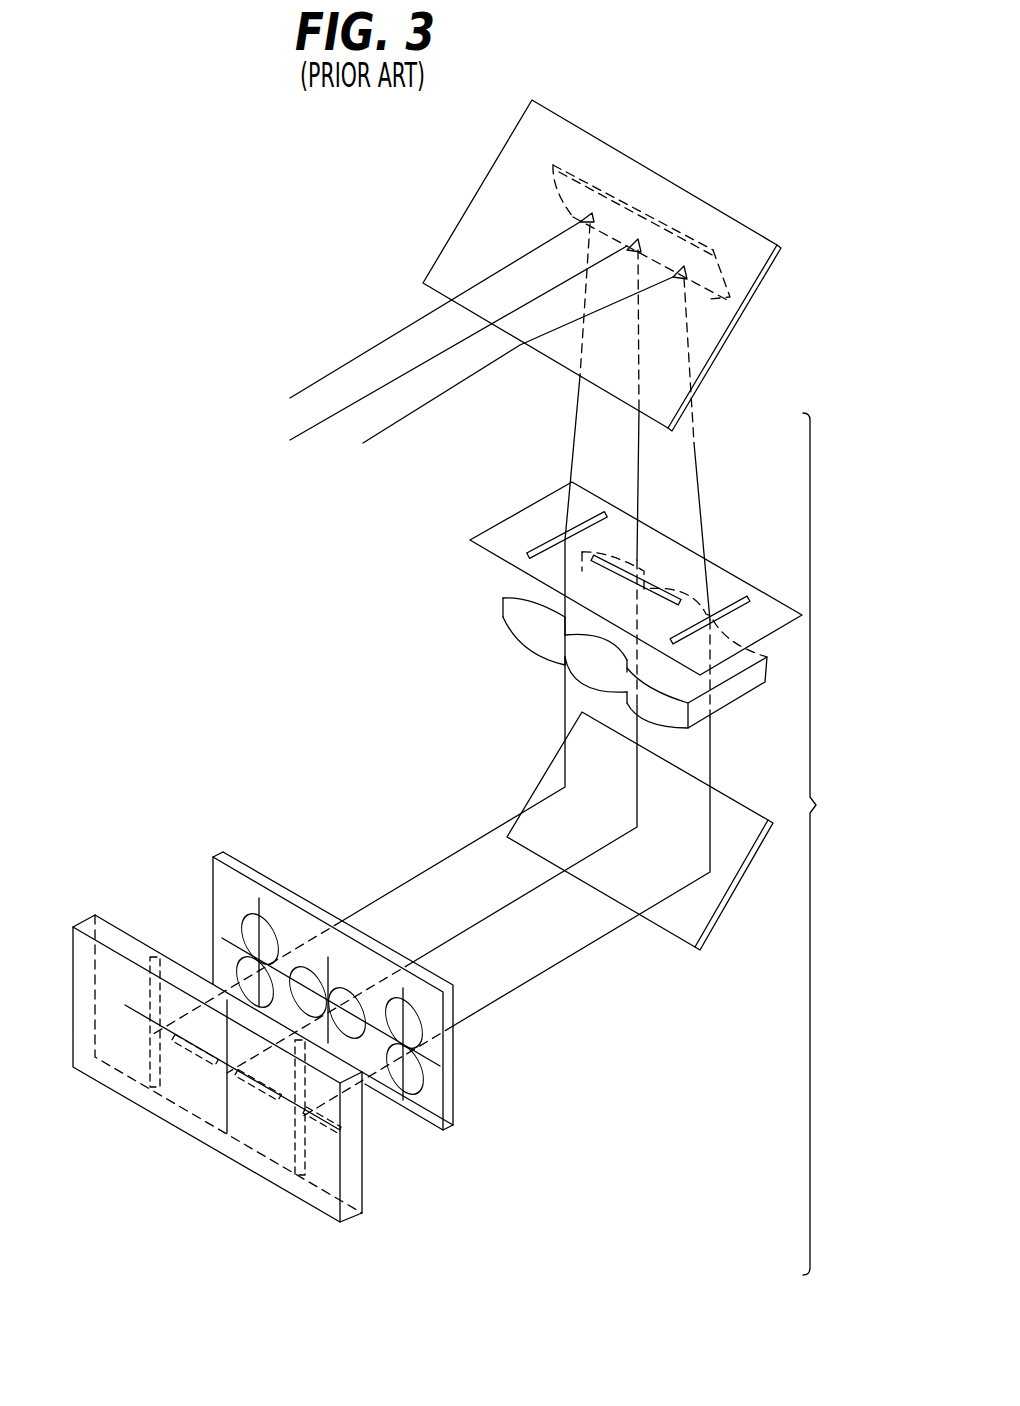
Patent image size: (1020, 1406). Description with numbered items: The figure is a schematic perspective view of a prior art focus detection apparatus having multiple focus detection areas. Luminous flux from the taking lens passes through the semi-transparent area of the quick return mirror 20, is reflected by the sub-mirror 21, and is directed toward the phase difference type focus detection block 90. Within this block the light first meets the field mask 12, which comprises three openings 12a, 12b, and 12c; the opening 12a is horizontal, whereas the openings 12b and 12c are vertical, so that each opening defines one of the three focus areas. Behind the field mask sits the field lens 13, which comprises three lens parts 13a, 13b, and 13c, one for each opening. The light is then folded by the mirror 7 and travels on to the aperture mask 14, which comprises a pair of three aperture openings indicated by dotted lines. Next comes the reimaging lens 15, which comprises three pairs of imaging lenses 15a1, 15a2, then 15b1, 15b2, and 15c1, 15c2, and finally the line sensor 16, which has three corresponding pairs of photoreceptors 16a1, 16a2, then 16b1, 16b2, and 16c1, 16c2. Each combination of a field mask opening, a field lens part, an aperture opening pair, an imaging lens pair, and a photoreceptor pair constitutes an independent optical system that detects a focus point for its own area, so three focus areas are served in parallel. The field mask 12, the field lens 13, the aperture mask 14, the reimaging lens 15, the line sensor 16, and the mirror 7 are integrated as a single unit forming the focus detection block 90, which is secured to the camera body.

The quick return mirror 20 is at (448, 253).
The sub-mirror 21 is at (720, 268).
The field mask 12 is at (626, 569).
The opening 12a is at (613, 553).
The opening 12b is at (527, 553).
The opening 12c is at (750, 610).
The field lens 13 is at (606, 665).
The lens part 13a is at (588, 685).
The lens part 13b is at (507, 630).
The lens part 13c is at (703, 714).
The mirror 7 is at (721, 905).
The focus detection block 90 is at (824, 844).
The aperture mask 14 is at (455, 1077).
The reimaging lens 15 is at (346, 988).
The imaging lens 15a1 is at (309, 969).
The imaging lens 15a2 is at (347, 990).
The imaging lens 15b1 is at (246, 915).
The imaging lens 15b2 is at (247, 963).
The imaging lens 15c1 is at (425, 1014).
The imaging lens 15c2 is at (428, 1065).
The line sensor 16 is at (249, 1059).
The photoreceptor 16a1 is at (190, 1053).
The photoreceptor 16a2 is at (247, 1087).
The photoreceptor 16b1 is at (150, 983).
The photoreceptor 16b2 is at (163, 1072).
The photoreceptor 16c1 is at (328, 1117).
The photoreceptor 16c2 is at (345, 1202).